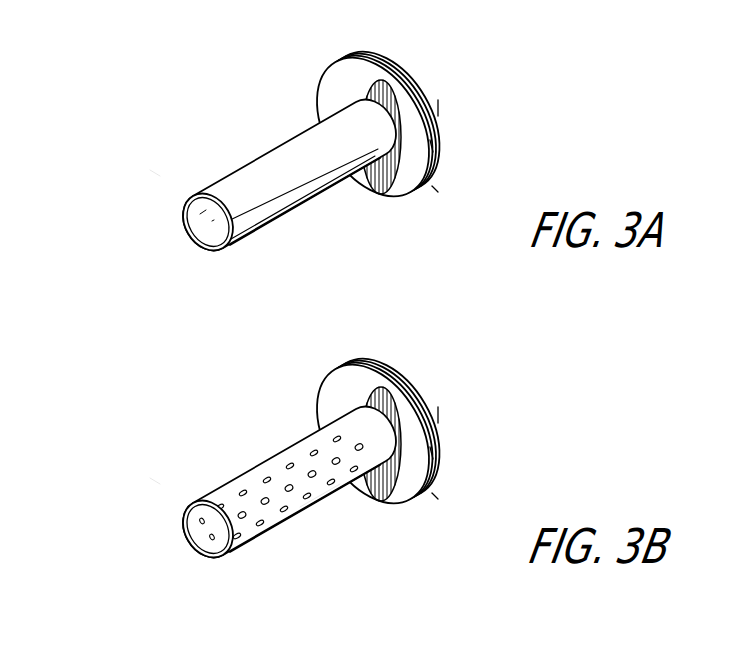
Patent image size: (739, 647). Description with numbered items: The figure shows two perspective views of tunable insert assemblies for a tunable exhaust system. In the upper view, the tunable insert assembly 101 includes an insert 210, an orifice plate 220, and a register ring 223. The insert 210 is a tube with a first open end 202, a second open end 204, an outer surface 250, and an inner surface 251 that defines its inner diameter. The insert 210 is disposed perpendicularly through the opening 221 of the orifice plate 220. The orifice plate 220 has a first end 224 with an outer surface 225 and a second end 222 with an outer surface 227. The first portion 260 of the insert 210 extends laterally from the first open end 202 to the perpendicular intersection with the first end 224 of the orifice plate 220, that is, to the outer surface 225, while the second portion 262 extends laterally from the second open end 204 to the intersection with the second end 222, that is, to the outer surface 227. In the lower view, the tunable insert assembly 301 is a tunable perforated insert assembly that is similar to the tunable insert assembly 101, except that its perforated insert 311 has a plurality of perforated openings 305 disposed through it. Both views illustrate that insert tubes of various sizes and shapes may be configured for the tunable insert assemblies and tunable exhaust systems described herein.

In FIG. 3A, the tunable insert assembly 101 is at (145, 167).
In FIG. 3A, the first open end 202 is at (190, 217).
In FIG. 3B, the first open end 202 is at (167, 529).
In FIG. 3A, the second open end 204 is at (440, 108).
In FIG. 3B, the second open end 204 is at (500, 403).
In FIG. 3A, the insert 210 is at (244, 215).
In FIG. 3A, the orifice plate 220 is at (421, 108).
In FIG. 3B, the orifice plate 220 is at (421, 468).
In FIG. 3A, the opening 221 is at (365, 99).
In FIG. 3B, the opening 221 is at (373, 421).
In FIG. 3A, the second end 222 is at (400, 70).
In FIG. 3B, the second end 222 is at (382, 421).
In FIG. 3A, the register ring 223 is at (432, 146).
In FIG. 3B, the register ring 223 is at (479, 478).
In FIG. 3A, the first end 224 is at (436, 190).
In FIG. 3B, the first end 224 is at (472, 515).
In FIG. 3A, the outer surface of the first end 225 is at (398, 172).
In FIG. 3B, the outer surface of the first end 225 is at (407, 474).
In FIG. 3A, the outer surface of the second end 227 is at (440, 131).
In FIG. 3B, the outer surface of the second end 227 is at (422, 432).
In FIG. 3A, the outer surface 250 is at (302, 183).
In FIG. 3B, the outer surface 250 is at (353, 512).
In FIG. 3A, the inner surface 251 is at (202, 235).
In FIG. 3B, the inner surface 251 is at (194, 551).
In FIG. 3A, the first portion 260 is at (286, 232).
In FIG. 3B, the first portion 260 is at (305, 552).
In FIG. 3A, the second portion 262 is at (428, 87).
In FIG. 3B, the second portion 262 is at (422, 428).
In FIG. 3B, the tunable insert assembly 301 is at (108, 435).
In FIG. 3B, the perforated openings 305 is at (310, 475).
In FIG. 3B, the perforated insert 311 is at (249, 503).